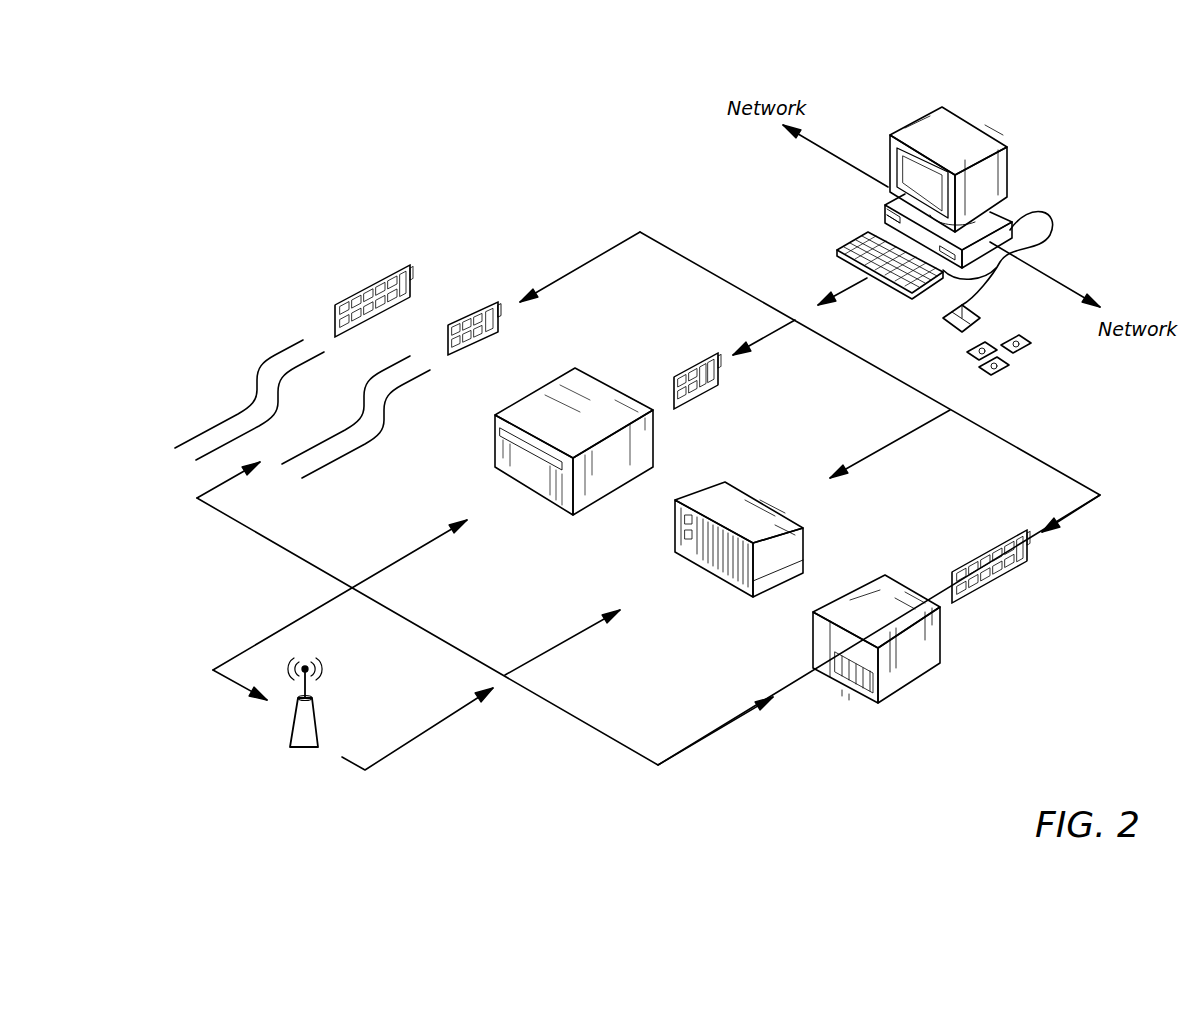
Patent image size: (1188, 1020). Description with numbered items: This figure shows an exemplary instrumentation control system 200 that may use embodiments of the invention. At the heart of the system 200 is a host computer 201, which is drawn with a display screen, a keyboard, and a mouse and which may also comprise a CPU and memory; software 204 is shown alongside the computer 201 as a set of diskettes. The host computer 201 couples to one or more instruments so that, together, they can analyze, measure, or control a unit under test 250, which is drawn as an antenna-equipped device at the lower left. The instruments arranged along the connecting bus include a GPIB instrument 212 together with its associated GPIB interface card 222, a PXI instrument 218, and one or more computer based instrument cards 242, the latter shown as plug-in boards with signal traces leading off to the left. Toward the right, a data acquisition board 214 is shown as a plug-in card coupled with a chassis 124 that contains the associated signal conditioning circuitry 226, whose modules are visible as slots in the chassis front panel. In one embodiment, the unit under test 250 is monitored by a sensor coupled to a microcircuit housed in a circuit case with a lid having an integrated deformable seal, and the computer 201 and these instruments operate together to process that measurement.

The instrumentation control system 200 is at (430, 84).
The host computer 201 is at (980, 127).
The software 204 is at (1023, 355).
The computer based instrument cards 242 is at (356, 297).
The GPIB interface card 222 is at (717, 420).
The GPIB instrument 212 is at (542, 498).
The PXI instrument 218 is at (713, 575).
The signal conditioning chassis 124 is at (873, 673).
The signal conditioning circuitry 226 is at (843, 676).
The data acquisition board 214 is at (1022, 596).
The unit under test 250 is at (305, 748).